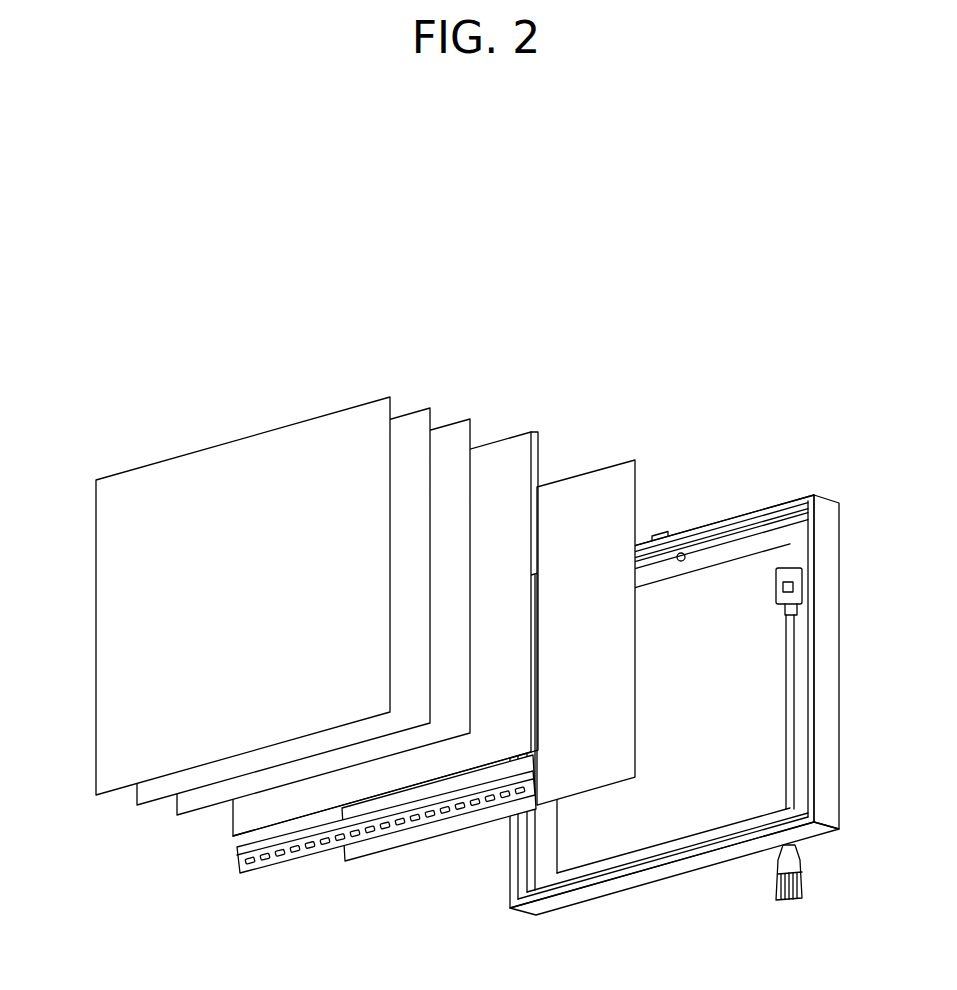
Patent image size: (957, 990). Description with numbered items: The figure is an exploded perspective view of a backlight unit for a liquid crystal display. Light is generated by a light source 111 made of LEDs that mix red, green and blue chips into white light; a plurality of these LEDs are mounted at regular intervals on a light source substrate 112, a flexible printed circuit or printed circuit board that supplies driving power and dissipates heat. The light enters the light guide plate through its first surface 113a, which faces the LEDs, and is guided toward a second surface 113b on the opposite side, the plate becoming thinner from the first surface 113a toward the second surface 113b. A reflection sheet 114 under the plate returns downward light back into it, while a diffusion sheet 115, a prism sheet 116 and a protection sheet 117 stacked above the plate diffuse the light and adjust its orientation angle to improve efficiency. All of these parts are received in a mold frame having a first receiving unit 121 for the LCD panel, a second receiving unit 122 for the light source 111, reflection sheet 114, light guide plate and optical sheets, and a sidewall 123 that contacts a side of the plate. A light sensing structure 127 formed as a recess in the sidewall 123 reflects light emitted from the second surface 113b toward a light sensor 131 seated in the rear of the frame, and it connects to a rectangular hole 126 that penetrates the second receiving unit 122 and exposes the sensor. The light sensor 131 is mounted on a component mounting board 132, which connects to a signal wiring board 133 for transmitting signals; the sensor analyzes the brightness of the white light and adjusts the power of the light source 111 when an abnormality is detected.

The light source 111 is at (292, 850).
The light source substrate 112 is at (342, 840).
The first surface 113a is at (235, 848).
The second surface 113b is at (533, 430).
The reflection sheet 114 is at (398, 837).
The diffusion sheet 115 is at (203, 800).
The prism sheet 116 is at (150, 798).
The protection sheet 117 is at (110, 771).
The first receiving unit 121 is at (778, 512).
The second receiving unit 122 is at (808, 528).
The sidewall 123 is at (725, 522).
The hole 126 is at (681, 561).
The light sensing structure 127 is at (672, 540).
The light sensor 131 is at (796, 580).
The component mounting board 132 is at (800, 594).
The signal wiring board 133 is at (790, 652).